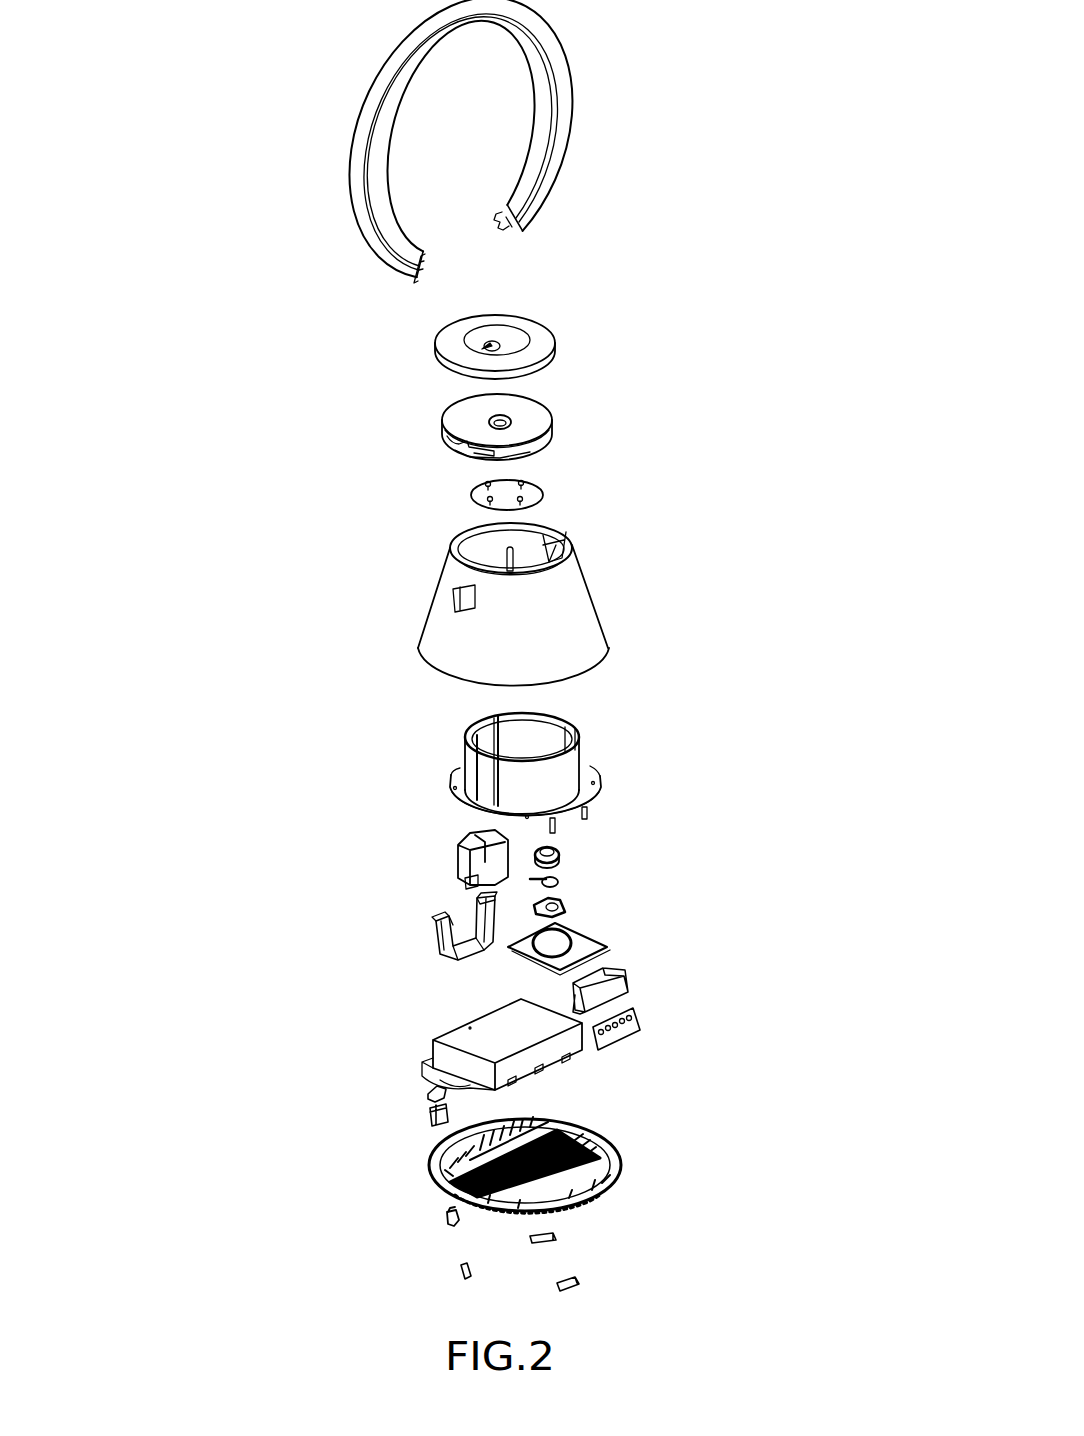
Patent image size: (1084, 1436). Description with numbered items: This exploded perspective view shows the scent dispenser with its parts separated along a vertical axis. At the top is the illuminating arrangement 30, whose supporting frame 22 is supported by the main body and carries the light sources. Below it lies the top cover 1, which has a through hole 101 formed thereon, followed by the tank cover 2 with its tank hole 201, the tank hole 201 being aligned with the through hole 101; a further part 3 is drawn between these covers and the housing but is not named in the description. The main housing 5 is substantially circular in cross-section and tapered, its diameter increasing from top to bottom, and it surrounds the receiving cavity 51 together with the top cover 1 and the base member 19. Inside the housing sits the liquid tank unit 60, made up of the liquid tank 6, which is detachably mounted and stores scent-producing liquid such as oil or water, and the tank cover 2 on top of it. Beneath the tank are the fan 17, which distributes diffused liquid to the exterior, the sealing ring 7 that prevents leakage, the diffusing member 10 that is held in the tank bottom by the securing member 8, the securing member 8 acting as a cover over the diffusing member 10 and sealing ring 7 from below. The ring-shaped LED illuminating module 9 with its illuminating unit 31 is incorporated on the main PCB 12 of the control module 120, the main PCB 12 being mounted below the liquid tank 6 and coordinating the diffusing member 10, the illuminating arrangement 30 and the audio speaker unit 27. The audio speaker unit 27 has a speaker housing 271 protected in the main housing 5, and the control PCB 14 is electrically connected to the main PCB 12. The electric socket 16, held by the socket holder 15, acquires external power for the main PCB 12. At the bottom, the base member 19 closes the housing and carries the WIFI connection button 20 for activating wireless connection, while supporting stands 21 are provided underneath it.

The supporting frame 22 is at (358, 52).
The illuminating arrangement 30 is at (585, 43).
The top cover 1 is at (533, 325).
The through hole 101 is at (485, 348).
The tank cover 2 is at (537, 413).
The tank hole 201 is at (486, 421).
The gasket plate 3 is at (537, 493).
The main housing 5 is at (550, 605).
The receiving cavity 51 is at (488, 549).
The liquid tank unit 60 is at (612, 718).
The liquid tank 6 is at (472, 760).
The fan 17 is at (460, 850).
The sealing ring 7 is at (552, 851).
The diffusing member 10 is at (553, 876).
The securing member 8 is at (535, 897).
The LED illuminating module 9 is at (512, 948).
The illuminating unit 31 is at (562, 935).
The main PCB 12 is at (575, 932).
The control module 120 is at (505, 978).
The speaker housing 271 is at (470, 1040).
The control PCB 14 is at (617, 1033).
The audio speaker unit 27 is at (605, 1062).
The socket holder 15 is at (432, 1097).
The electric socket 16 is at (433, 1120).
The base member 19 is at (610, 1185).
The WIFI connection button 20 is at (448, 1221).
The supporting stands 21 is at (578, 1285).